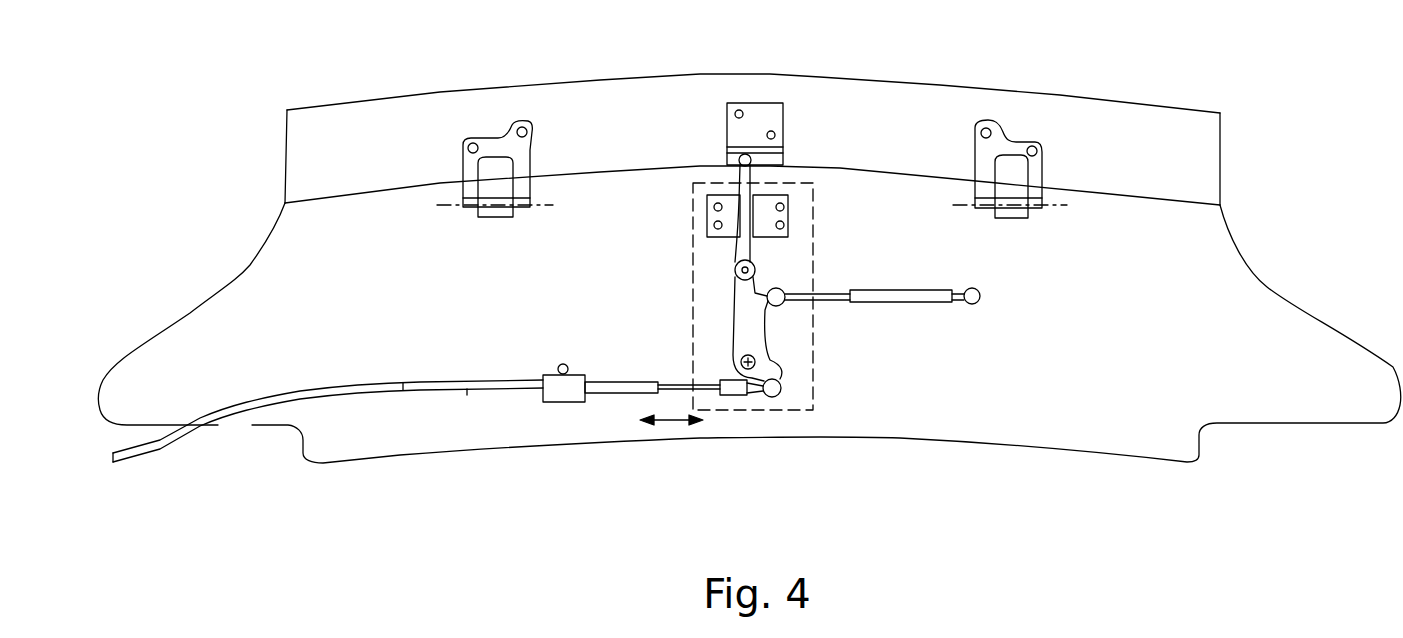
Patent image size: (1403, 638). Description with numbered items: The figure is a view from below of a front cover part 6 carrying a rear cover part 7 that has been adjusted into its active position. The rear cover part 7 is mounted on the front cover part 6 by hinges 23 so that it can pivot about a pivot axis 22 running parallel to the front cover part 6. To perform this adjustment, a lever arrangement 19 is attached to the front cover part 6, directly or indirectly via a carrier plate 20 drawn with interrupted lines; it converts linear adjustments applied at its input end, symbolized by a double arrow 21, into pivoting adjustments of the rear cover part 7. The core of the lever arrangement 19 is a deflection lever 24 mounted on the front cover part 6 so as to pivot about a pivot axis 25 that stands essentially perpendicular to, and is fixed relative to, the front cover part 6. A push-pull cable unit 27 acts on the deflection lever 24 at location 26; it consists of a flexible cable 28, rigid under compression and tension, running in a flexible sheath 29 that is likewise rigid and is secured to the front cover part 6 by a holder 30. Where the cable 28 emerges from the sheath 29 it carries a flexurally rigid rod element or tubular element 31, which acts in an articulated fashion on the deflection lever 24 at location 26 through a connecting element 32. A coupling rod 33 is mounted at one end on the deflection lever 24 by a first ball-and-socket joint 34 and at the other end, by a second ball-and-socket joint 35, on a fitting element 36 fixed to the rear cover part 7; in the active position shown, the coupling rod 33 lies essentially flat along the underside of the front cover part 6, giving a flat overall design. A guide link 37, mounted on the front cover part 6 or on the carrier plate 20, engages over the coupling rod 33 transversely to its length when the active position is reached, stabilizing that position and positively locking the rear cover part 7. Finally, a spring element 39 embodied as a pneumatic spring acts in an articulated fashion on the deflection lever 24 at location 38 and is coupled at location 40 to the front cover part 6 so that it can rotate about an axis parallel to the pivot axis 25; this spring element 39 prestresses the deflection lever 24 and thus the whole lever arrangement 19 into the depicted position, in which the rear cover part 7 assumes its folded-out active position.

The front cover part 6 is at (985, 417).
The rear cover part 7 is at (875, 93).
The lever arrangement 19 is at (678, 320).
The carrier plate 20 is at (803, 353).
The double arrow 21 is at (672, 421).
The pivot axis 22 is at (447, 207).
The hinges 23 is at (468, 172).
The deflection lever 24 is at (748, 318).
The pivot axis 25 is at (741, 357).
The location 26 is at (772, 397).
The push-pull cable unit 27 is at (353, 404).
The flexible cable 28 is at (403, 390).
The flexible sheath 29 is at (467, 395).
The holder 30 is at (567, 393).
The rod element or tubular element 31 is at (673, 385).
The connecting element 32 is at (732, 395).
The coupling rod 33 is at (740, 246).
The first ball-and-socket joint 34 is at (753, 270).
The second ball-and-socket joint 35 is at (758, 160).
The fitting element 36 is at (740, 131).
The guide link 37 is at (783, 220).
The location 38 is at (785, 292).
The spring element 39 is at (920, 298).
The location 40 is at (982, 297).